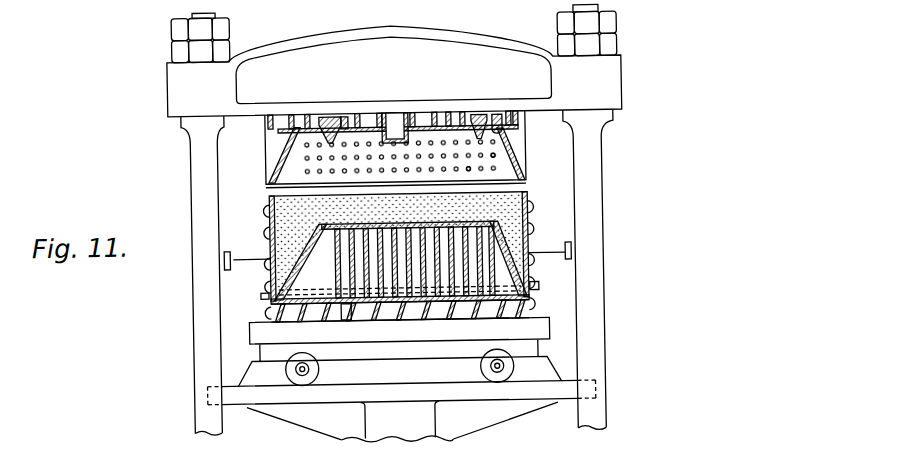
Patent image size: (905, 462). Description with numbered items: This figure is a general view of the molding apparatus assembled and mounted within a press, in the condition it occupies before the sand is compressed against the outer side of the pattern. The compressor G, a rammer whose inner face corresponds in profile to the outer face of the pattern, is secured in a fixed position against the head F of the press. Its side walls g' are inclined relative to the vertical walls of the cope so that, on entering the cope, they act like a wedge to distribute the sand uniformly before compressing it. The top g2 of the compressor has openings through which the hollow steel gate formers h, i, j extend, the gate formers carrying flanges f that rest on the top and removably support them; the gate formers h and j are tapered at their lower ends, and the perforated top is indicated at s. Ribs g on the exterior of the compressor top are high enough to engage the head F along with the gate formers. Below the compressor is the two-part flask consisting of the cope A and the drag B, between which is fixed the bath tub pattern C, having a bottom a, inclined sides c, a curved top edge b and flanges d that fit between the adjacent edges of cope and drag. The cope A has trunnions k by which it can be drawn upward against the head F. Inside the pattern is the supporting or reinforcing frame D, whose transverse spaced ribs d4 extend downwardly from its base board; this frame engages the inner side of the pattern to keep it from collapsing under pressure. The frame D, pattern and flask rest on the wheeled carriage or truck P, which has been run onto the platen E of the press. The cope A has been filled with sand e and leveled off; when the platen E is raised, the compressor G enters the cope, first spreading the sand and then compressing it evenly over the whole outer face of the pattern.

The head of the press F is at (393, 69).
The ribs g is at (375, 115).
The gate former h is at (328, 115).
The flanges f is at (341, 116).
The gate former j is at (484, 118).
The gate former i is at (395, 128).
The compressor G is at (395, 149).
The side walls of the compressor g' is at (355, 159).
The top of the compressor g2 is at (400, 156).
The perforations s is at (472, 170).
The pattern C is at (313, 232).
The molding sand e is at (399, 245).
The cope A is at (262, 220).
The bottom of the pattern a is at (412, 228).
The inclined sides of the pattern c is at (307, 255).
The trunnions k is at (248, 255).
The flanges of the pattern d is at (260, 291).
The drag B is at (262, 309).
The curved top edge of the pattern b is at (281, 304).
The transverse spaced ribs d4 is at (344, 316).
The supporting or reinforcing frame D is at (399, 333).
The carriage or truck P is at (536, 352).
The platen E is at (398, 393).